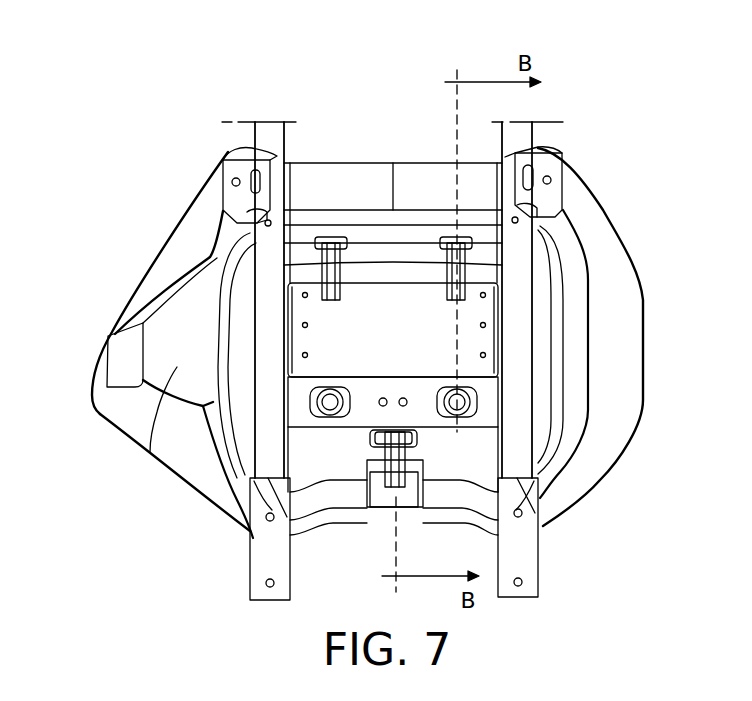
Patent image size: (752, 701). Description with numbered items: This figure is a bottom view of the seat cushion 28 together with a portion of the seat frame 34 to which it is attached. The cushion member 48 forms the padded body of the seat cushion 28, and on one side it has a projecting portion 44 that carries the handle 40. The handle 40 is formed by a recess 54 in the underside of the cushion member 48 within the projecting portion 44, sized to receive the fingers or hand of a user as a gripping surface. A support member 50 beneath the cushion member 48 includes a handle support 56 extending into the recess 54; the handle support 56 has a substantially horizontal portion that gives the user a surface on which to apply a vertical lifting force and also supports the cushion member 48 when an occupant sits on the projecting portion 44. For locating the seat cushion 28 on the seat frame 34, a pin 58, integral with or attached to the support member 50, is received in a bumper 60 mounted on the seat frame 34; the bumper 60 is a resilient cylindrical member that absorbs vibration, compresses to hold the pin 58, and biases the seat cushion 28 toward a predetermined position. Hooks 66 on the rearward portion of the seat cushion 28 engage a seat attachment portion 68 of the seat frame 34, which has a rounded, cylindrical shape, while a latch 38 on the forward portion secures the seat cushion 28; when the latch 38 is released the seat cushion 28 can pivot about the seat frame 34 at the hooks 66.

The seat cushion 28 is at (598, 237).
The cushion member 48 is at (202, 237).
The hooks 66 is at (323, 252).
The seat attachment portion 68 is at (362, 253).
The recess 54 is at (110, 340).
The handle 40 is at (137, 345).
The projecting portion 44 is at (92, 413).
The handle support 56 is at (150, 452).
The pin 58 is at (328, 402).
The bumper 60 is at (338, 430).
The latch 38 is at (382, 500).
The seat frame 34 is at (252, 583).
The support member 50 is at (557, 480).